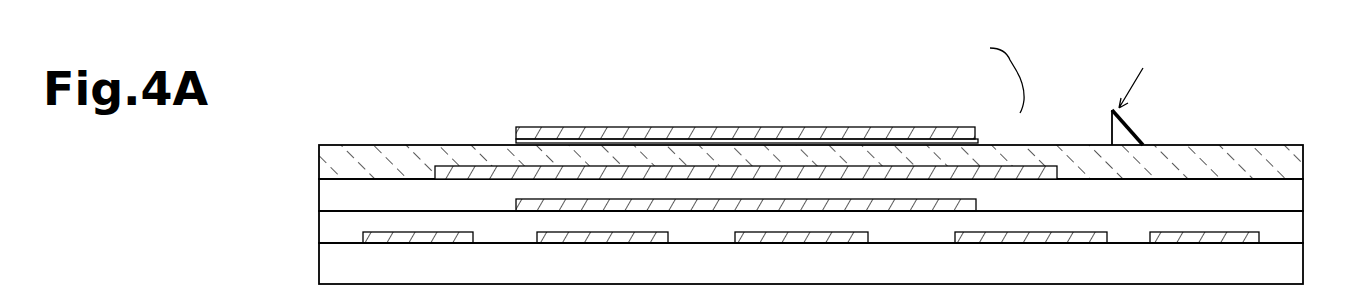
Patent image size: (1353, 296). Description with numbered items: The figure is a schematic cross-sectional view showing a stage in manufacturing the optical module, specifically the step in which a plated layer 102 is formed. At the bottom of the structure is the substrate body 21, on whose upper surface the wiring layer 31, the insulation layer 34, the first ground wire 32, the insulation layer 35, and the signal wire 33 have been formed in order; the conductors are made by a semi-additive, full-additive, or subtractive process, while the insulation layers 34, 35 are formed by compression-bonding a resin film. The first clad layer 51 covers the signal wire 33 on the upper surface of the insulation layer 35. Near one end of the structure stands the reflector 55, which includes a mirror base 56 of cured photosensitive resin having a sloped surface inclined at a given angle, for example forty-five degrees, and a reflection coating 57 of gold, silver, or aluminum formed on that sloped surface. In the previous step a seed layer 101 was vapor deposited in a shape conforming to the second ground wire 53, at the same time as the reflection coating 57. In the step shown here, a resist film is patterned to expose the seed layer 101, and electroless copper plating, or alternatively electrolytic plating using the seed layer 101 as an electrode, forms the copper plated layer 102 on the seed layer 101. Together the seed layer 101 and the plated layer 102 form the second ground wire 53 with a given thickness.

The substrate body 21 is at (1304, 262).
The wiring layer 31 is at (1062, 244).
The first ground wire 32 is at (877, 212).
The signal wire 33 is at (1023, 179).
The insulation layer 34 is at (1304, 234).
The insulation layer 35 is at (1304, 199).
The first clad layer 51 is at (1304, 166).
The second ground wire 53 is at (1022, 80).
The reflector 55 is at (1145, 80).
The mirror base 56 is at (1110, 130).
The reflection coating 57 is at (1128, 119).
The seed layer 101 is at (979, 142).
The plated layer 102 is at (923, 128).